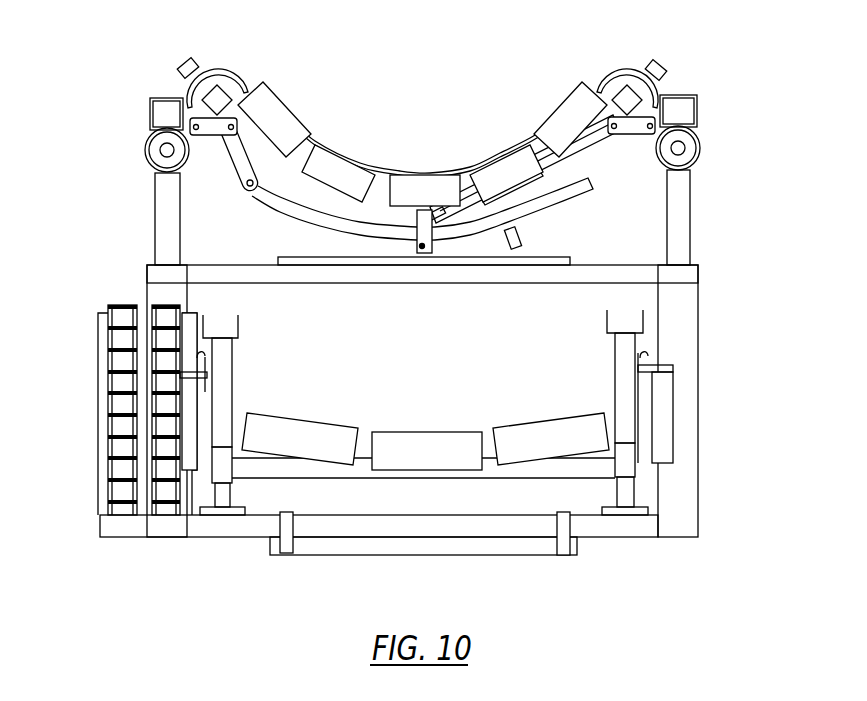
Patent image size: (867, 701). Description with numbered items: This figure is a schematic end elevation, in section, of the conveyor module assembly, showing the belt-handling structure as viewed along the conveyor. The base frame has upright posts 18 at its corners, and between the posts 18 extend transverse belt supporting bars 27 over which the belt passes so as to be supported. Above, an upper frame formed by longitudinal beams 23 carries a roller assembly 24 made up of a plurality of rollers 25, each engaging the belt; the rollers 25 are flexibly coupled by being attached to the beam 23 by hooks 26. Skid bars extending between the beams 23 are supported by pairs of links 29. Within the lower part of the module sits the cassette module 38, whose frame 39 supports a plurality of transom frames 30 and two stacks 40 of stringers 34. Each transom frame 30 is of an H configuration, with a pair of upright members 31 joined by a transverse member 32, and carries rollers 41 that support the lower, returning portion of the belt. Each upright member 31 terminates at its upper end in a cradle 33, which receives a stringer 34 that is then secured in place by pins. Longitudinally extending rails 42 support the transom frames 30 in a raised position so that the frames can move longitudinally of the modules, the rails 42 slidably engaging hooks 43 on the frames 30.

The upright post 18 is at (147, 291).
The longitudinal beam 23 is at (222, 93).
The roller assembly 24 is at (361, 153).
The roller 25 is at (327, 147).
The hook 26 is at (228, 72).
The transverse belt supporting bar 27 is at (457, 277).
The link 29 is at (247, 157).
The transom frame 30 is at (424, 398).
The upright member 31 is at (231, 391).
The transverse member 32 is at (523, 480).
The cradle 33 is at (240, 327).
The stringer 34 is at (165, 468).
The cassette module 38 is at (122, 547).
The frame 39 is at (239, 543).
The stack of stringers 40 is at (97, 490).
The roller 41 is at (520, 440).
The rail 42 is at (646, 375).
The hook 43 is at (647, 351).